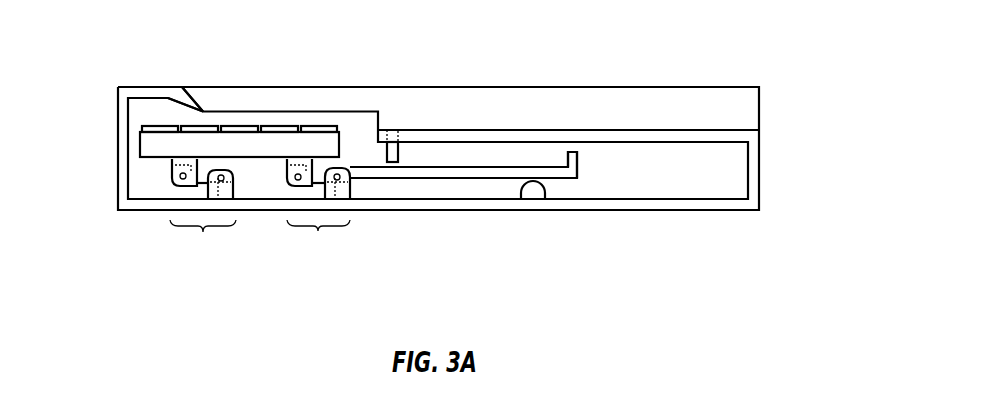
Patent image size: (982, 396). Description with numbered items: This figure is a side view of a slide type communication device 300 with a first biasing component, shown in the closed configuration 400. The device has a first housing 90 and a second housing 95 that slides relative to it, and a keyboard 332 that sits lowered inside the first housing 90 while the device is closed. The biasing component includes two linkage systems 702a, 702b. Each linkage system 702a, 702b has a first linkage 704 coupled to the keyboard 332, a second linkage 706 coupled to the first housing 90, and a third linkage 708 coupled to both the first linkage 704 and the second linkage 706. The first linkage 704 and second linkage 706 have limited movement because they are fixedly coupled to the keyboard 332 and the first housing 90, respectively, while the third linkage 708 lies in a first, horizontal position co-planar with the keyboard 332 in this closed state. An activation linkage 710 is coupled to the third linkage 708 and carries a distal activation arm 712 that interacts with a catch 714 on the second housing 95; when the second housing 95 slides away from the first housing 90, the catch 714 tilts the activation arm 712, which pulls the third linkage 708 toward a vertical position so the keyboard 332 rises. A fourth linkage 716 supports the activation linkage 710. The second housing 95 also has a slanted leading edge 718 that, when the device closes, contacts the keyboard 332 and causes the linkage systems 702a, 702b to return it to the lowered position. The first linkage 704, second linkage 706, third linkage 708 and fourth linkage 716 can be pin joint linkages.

The closed configuration 400 is at (122, 48).
The slide type communication device 300 is at (447, 46).
The slanted leading edge 718 is at (200, 100).
The catch 714 is at (395, 135).
The second housing 95 is at (567, 85).
The keyboard 332 is at (150, 142).
The first linkage 704 is at (170, 162).
The second linkage 706 is at (233, 190).
The third linkage 708 is at (202, 187).
The linkage system 702b is at (203, 232).
The linkage system 702a is at (318, 231).
The activation linkage 710 is at (435, 171).
The activation arm 712 is at (582, 165).
The fourth linkage 716 is at (532, 190).
The first housing 90 is at (697, 211).